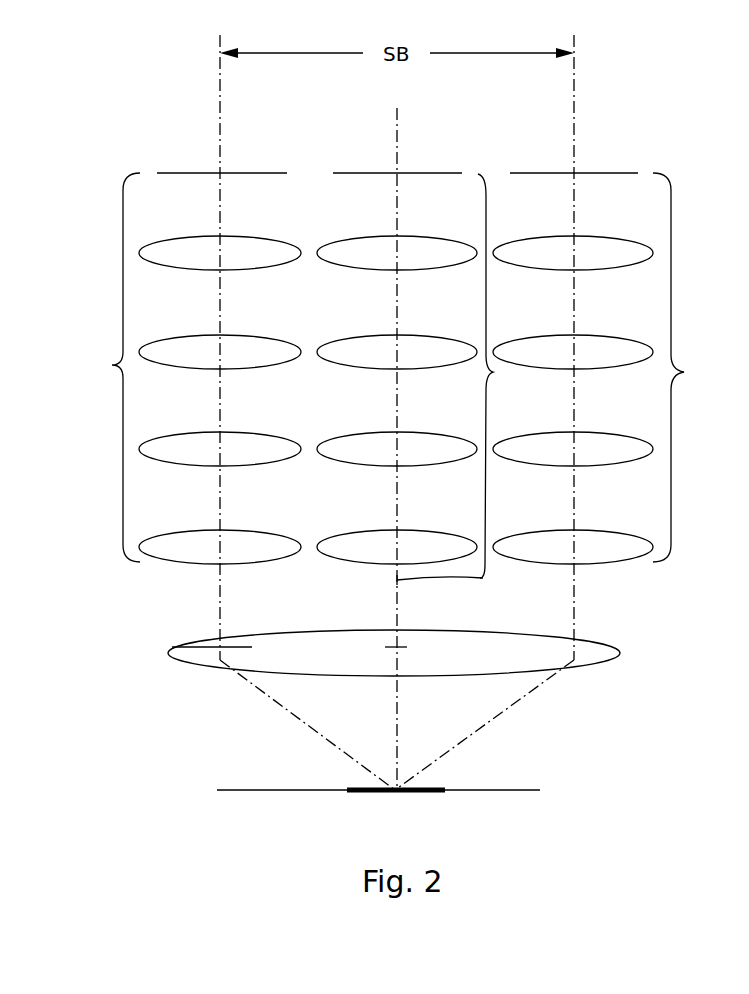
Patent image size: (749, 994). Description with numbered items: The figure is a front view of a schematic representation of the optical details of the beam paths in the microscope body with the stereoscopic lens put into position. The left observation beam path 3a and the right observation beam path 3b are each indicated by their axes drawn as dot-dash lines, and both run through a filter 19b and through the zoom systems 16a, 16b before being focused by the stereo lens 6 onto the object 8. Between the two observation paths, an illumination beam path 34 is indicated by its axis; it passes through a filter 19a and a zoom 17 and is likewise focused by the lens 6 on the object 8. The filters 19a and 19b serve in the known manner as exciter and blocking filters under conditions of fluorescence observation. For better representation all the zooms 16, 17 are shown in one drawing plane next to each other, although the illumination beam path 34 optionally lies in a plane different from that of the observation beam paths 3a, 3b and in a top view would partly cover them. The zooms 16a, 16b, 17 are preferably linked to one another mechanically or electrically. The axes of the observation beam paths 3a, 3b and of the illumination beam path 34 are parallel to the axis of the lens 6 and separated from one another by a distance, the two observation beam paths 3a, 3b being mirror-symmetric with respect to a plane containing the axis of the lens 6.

The left observation beam path 3a is at (219, 612).
The right observation beam path 3b is at (575, 630).
The stereo lens 6 is at (168, 650).
The object 8 is at (416, 787).
The zooms 16 is at (533, 400).
The zoom system 16a is at (170, 368).
The zoom system 16b is at (621, 368).
The zoom 17 is at (494, 374).
The filter 19a is at (430, 175).
The filter 19b is at (178, 173).
The illumination beam path 34 is at (483, 578).